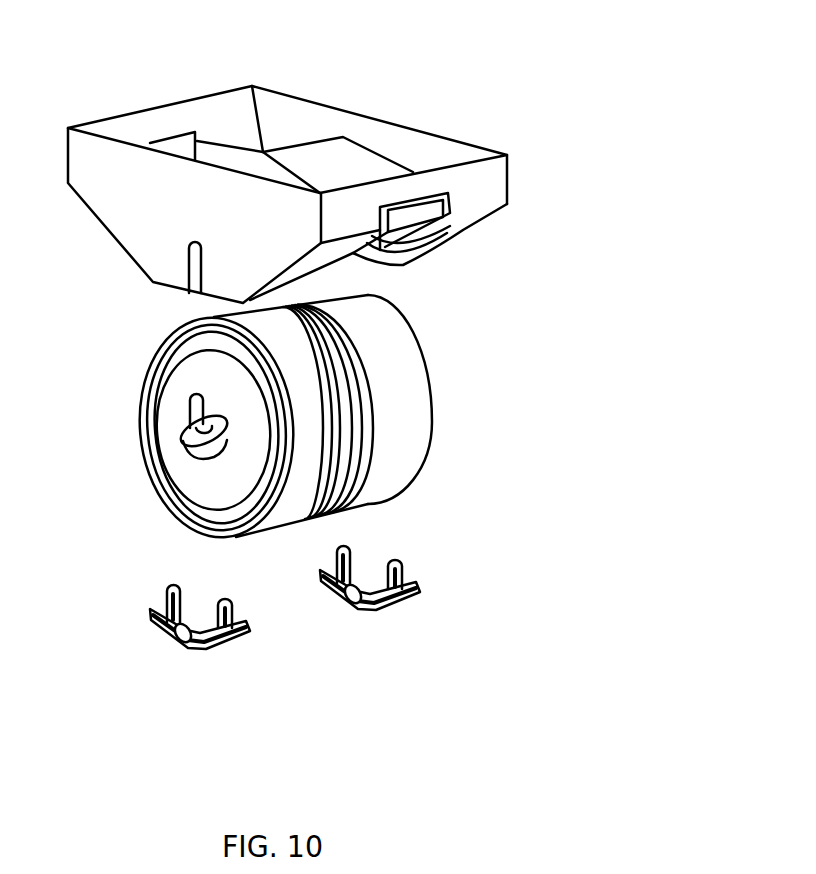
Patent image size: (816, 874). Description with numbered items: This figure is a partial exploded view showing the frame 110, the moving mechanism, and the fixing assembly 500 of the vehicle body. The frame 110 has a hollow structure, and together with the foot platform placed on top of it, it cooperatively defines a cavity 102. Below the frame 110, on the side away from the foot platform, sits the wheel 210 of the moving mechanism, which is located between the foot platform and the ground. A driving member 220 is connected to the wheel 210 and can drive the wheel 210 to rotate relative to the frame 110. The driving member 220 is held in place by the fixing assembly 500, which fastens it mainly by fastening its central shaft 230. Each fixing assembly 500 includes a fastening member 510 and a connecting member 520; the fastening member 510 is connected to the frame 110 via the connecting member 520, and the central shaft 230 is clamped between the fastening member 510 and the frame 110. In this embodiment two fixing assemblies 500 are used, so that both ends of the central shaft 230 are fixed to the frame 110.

The cavity 102 is at (285, 110).
The frame 110 is at (423, 130).
The wheel 210 is at (398, 367).
The driving member 220 is at (222, 498).
The central shaft 230 is at (192, 457).
The fixing assembly 500 is at (186, 673).
The fastening member 510 is at (355, 603).
The connecting member 520 is at (397, 563).